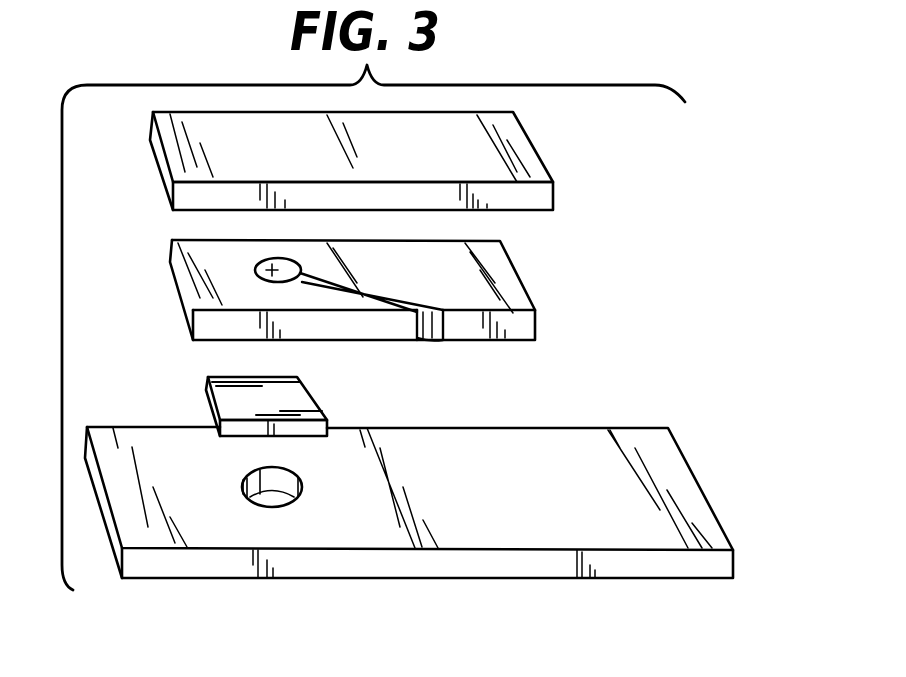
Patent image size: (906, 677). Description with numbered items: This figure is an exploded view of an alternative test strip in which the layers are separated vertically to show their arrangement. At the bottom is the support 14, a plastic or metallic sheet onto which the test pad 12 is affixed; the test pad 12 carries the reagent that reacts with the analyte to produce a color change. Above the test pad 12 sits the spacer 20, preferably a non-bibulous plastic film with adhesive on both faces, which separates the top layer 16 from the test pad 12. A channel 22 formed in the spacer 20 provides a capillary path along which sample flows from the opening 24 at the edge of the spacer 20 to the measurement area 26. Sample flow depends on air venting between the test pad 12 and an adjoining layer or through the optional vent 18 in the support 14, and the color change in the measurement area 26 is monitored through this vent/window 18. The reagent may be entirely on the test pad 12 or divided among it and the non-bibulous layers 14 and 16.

The test pad 12 is at (330, 406).
The support 14 is at (683, 455).
The top layer 16 is at (540, 153).
The vent/window 18 is at (243, 481).
The spacer 20 is at (537, 305).
The channel 22 is at (375, 294).
The opening 24 is at (426, 342).
The measurement area 26 is at (257, 267).